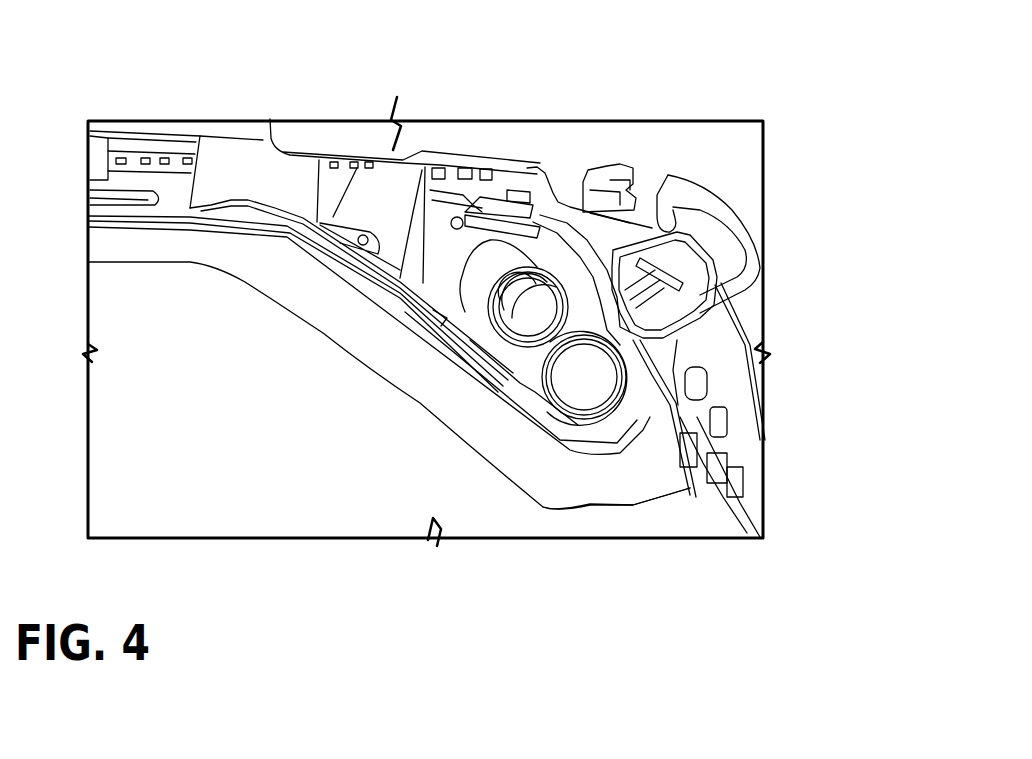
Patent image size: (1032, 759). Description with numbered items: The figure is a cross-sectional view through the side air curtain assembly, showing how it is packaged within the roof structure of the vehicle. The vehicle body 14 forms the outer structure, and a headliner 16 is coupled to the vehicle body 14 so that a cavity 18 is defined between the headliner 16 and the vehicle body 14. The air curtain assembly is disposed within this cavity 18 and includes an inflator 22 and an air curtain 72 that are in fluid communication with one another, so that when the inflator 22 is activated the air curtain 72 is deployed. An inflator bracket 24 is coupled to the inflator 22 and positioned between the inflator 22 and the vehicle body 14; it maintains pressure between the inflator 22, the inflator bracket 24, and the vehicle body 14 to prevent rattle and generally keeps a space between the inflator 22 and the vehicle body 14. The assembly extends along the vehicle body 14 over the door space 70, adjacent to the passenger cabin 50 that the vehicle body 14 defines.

The vehicle body 14 is at (600, 267).
The headliner 16 is at (465, 412).
The cavity 18 is at (648, 389).
The inflator 22 is at (532, 330).
The inflator bracket 24 is at (543, 255).
The passenger cabin 50 is at (363, 457).
The door space 70 is at (633, 505).
The air curtain 72 is at (583, 388).